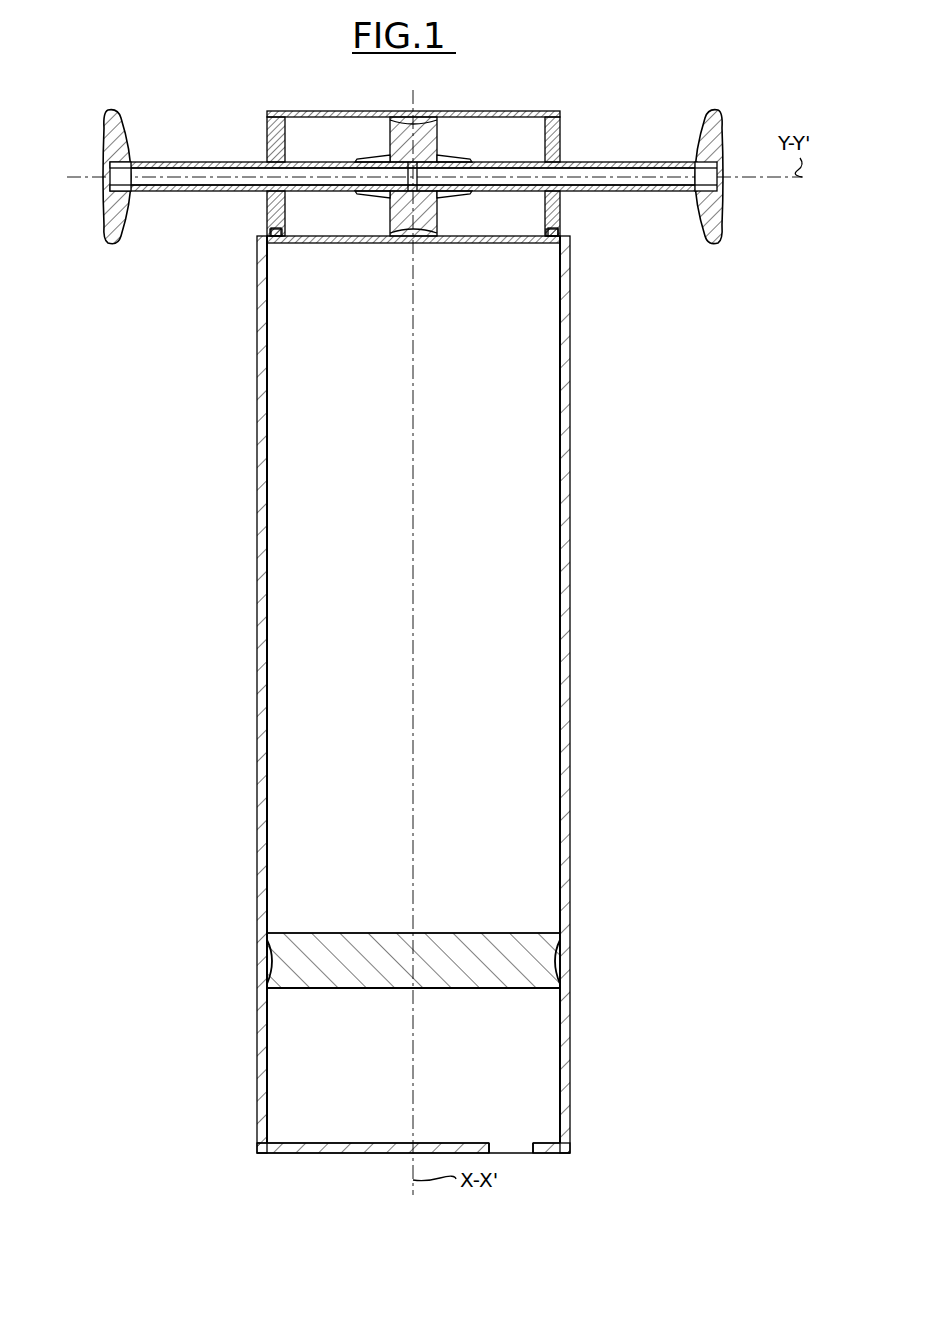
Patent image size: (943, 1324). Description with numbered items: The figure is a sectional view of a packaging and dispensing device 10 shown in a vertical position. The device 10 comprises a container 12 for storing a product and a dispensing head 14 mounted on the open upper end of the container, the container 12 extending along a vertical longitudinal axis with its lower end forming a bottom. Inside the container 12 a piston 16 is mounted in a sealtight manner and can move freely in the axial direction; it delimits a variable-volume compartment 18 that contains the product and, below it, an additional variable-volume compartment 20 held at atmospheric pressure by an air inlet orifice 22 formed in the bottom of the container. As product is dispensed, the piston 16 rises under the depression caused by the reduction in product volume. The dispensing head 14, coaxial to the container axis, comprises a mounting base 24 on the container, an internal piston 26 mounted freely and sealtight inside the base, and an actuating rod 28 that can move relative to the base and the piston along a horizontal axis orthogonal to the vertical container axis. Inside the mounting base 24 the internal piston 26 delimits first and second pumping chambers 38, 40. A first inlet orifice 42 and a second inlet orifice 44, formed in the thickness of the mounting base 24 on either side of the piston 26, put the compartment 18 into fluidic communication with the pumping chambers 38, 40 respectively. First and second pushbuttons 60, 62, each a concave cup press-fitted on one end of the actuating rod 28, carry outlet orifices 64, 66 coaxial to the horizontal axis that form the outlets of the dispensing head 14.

The device 10 is at (218, 563).
The container 12 is at (572, 551).
The dispensing head 14 is at (612, 65).
The piston 16 is at (517, 961).
The variable-volume compartment 18 is at (500, 598).
The additional compartment 20 is at (501, 1077).
The air inlet orifice 22 is at (517, 1151).
The mounting base 24 is at (520, 112).
The internal piston 26 is at (425, 120).
The actuating rod 28 is at (620, 162).
The first pumping chamber 38 is at (349, 147).
The second pumping chamber 40 is at (503, 147).
The first inlet orifice 42 is at (272, 240).
The second inlet orifice 44 is at (553, 240).
The first pushbutton 60 is at (110, 112).
The second pushbutton 62 is at (716, 112).
The outlet orifice 64 is at (118, 170).
The outlet orifice 66 is at (713, 171).